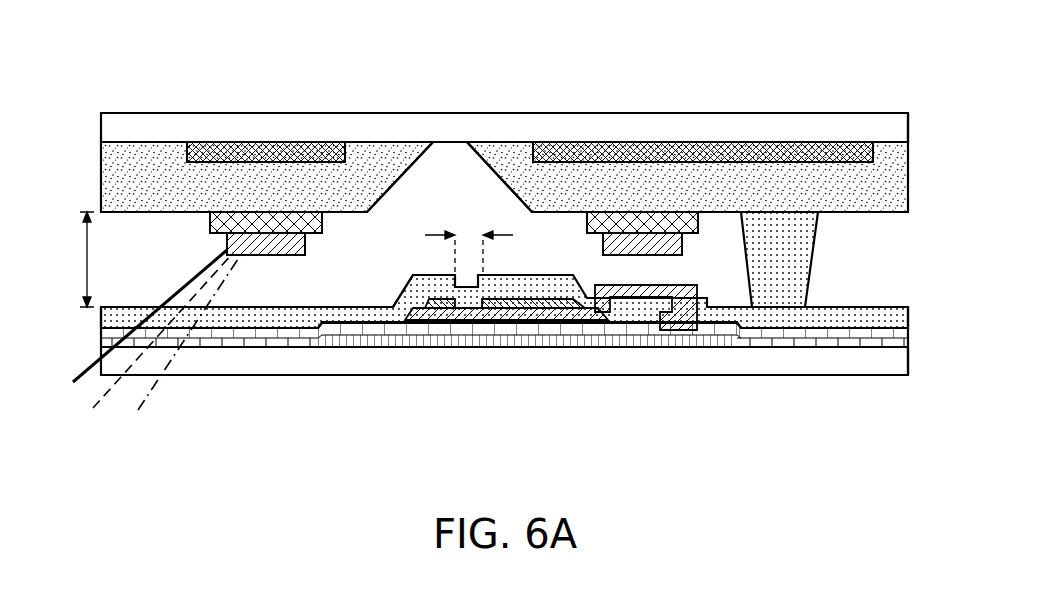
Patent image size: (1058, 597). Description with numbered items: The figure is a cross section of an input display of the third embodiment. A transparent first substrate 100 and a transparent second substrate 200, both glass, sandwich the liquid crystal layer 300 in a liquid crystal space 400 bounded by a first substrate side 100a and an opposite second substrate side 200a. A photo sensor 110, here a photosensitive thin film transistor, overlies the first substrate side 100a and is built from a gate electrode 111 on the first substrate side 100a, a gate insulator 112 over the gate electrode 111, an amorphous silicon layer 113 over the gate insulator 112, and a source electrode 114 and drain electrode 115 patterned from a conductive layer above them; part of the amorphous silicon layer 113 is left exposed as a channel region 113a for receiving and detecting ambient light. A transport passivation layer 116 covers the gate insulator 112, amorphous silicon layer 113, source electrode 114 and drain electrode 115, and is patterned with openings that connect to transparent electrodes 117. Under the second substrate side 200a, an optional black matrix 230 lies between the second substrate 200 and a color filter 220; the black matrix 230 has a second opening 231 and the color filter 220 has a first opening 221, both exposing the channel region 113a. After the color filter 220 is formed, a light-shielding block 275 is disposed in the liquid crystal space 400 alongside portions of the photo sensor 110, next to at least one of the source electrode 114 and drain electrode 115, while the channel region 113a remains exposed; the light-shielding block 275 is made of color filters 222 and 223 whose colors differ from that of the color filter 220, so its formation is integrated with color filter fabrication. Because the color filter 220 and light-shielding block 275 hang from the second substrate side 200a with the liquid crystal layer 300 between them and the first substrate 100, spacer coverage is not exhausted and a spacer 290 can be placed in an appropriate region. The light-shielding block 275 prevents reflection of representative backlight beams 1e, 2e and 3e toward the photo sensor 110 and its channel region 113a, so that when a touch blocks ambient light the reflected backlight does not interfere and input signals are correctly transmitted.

The first substrate 100 is at (803, 373).
The first substrate side 100a is at (912, 375).
The photo sensor 110 is at (504, 382).
The gate electrode 111 is at (533, 340).
The gate insulator 112 is at (470, 326).
The amorphous silicon layer 113 is at (545, 315).
The channel region 113a is at (469, 236).
The source electrode 114 is at (605, 310).
The drain electrode 115 is at (421, 318).
The transport passivation layer 116 is at (405, 325).
The transparent electrodes 117 is at (664, 364).
The light beam 1e is at (83, 383).
The light beam 2e is at (110, 389).
The light beam 3e is at (153, 386).
The second substrate 200 is at (449, 112).
The second substrate side 200a is at (910, 138).
The color filter 220 is at (145, 150).
The first opening 221 is at (501, 167).
The color filter 222 is at (303, 223).
The color filter 223 is at (297, 247).
The black matrix 230 is at (252, 160).
The second opening 231 is at (547, 147).
The light-shielding block 275 is at (454, 130).
The spacer 290 is at (757, 288).
The liquid crystal layer 300 is at (847, 260).
The liquid crystal space 400 is at (87, 259).